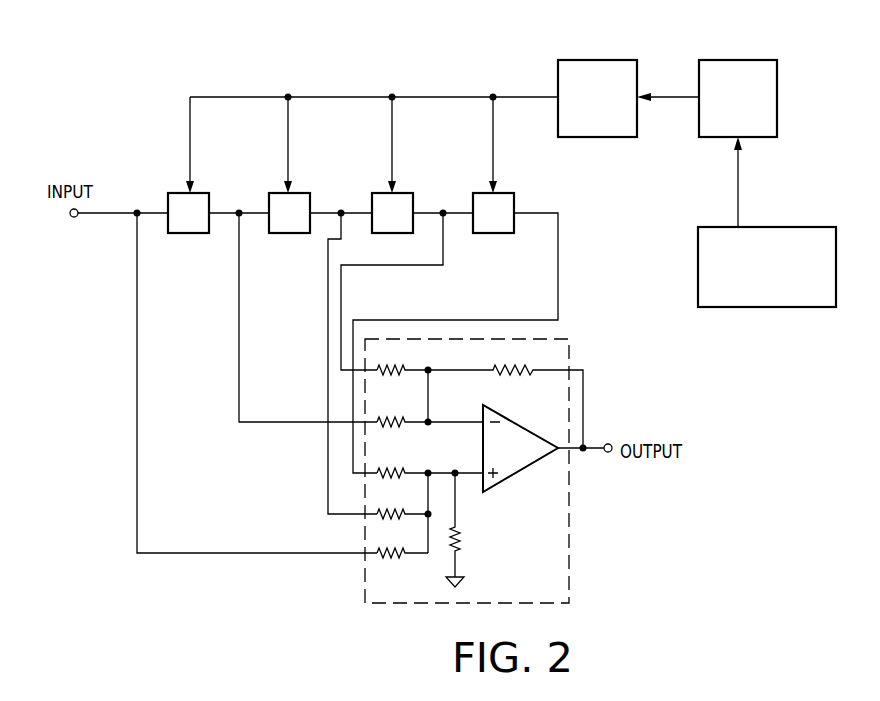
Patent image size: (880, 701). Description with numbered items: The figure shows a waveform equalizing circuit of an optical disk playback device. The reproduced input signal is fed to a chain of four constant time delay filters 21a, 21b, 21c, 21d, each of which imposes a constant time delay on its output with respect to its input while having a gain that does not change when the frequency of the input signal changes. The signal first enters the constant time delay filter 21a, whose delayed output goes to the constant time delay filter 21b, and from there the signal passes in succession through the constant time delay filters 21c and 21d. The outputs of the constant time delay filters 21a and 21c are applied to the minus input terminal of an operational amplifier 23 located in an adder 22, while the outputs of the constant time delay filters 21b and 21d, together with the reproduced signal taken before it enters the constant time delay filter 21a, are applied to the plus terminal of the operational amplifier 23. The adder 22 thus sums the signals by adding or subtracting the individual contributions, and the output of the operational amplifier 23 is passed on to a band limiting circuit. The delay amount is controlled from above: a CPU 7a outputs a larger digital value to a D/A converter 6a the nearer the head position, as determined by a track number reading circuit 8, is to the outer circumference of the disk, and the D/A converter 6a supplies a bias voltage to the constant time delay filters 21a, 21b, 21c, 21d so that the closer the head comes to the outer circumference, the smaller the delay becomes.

The D/A converter 6a is at (597, 58).
The CPU 7a is at (740, 58).
The track number reading circuit 8 is at (790, 225).
The constant time delay filter 21a is at (203, 191).
The constant time delay filter 21b is at (304, 191).
The constant time delay filter 21c is at (405, 191).
The constant time delay filter 21d is at (507, 191).
The adder 22 is at (496, 471).
The operational amplifier 23 is at (512, 435).